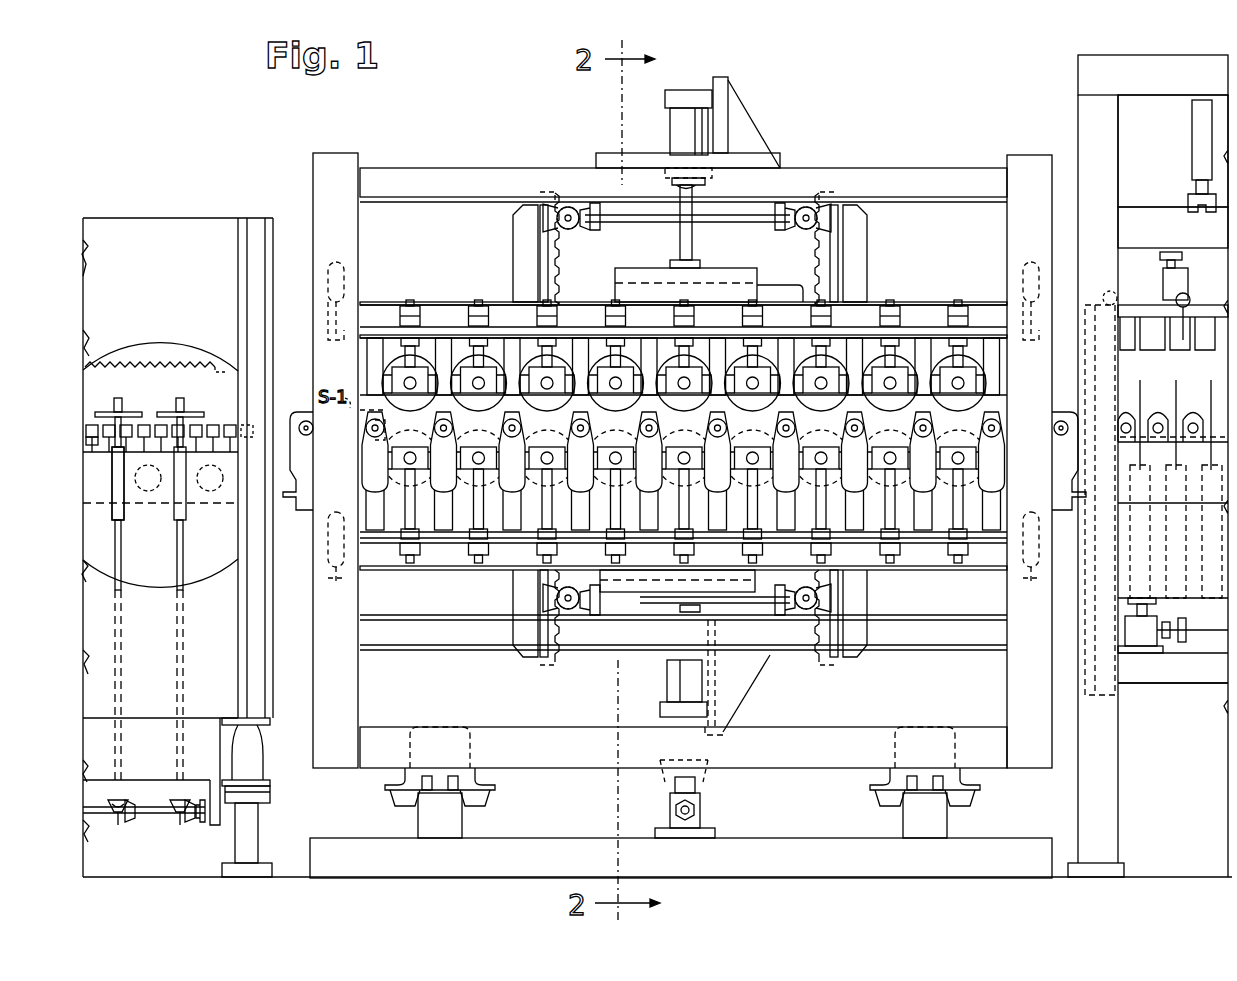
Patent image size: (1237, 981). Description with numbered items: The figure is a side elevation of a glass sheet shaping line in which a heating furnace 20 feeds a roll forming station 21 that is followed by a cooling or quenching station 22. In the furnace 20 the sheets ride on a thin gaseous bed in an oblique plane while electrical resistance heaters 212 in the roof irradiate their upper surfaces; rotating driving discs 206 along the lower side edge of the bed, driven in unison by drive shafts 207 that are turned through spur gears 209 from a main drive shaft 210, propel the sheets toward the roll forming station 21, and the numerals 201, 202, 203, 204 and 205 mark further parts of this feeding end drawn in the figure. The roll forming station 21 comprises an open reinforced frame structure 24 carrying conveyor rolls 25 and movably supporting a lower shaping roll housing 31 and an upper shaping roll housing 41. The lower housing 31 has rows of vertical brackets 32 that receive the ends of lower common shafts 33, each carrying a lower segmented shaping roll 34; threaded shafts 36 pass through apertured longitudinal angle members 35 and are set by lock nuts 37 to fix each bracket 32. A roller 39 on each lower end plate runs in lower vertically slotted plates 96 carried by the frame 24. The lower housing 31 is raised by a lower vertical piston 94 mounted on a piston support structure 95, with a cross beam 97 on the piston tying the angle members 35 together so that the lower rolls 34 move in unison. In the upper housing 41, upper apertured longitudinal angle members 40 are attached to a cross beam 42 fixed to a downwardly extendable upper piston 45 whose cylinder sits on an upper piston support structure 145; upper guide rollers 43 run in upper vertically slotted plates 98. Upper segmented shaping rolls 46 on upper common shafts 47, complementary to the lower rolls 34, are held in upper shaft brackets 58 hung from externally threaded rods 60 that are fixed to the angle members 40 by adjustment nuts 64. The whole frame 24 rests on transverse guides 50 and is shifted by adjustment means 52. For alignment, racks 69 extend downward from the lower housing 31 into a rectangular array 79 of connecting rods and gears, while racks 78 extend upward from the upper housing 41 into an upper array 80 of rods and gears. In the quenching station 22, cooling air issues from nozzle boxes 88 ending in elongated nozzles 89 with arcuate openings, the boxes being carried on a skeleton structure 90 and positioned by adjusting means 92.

The heating furnace 20 is at (172, 205).
The roll forming station 21 is at (450, 150).
The cooling or quenching station 22 is at (1062, 72).
The open reinforced frame structure 24 is at (305, 185).
The conveyor rolls 25 is at (660, 428).
The lower shaping roll housing 31 is at (480, 585).
The vertical brackets 32 is at (432, 440).
The lower common shafts 33 is at (498, 440).
The lower segmented shaping rolls 34 is at (568, 440).
The apertured longitudinal angle members 35 is at (700, 530).
The threaded shafts 36 is at (565, 520).
The lock nuts 37 is at (470, 540).
The roller 39 is at (335, 577).
The upper apertured longitudinal angle members 40 is at (922, 325).
The upper shaping roll housing 41 is at (462, 292).
The cross beam 42 is at (660, 278).
The upper guide rollers 43 is at (330, 322).
The upper piston 45 is at (678, 128).
The upper segmented shaping rolls 46 is at (905, 440).
The upper common shaft 47 is at (770, 440).
The transverse guides 50 is at (370, 800).
The adjustment means 52 is at (705, 803).
The upper shaft brackets 58 is at (790, 440).
The externally threaded rods 60 is at (868, 345).
The adjustment nuts 64 is at (898, 328).
The racks 69 is at (555, 665).
The racks 78 is at (562, 245).
The rectangular array of lower horizontal connecting rods and gears 79 is at (740, 598).
The upper array of rods and gears 80 is at (708, 222).
The nozzle boxes 88 is at (1158, 318).
The elongated nozzles 89 is at (1165, 428).
The skeleton structure 90 is at (1115, 200).
The adjusting means 92 is at (1145, 660).
The lower vertical piston 94 is at (680, 683).
The piston support structure 95 is at (742, 655).
The lower vertically slotted plates 96 is at (338, 585).
The cross beam 97 is at (605, 598).
The upper vertically slotted plates 98 is at (335, 345).
The upper piston support structure 145 is at (746, 158).
The hopper cells 201 is at (75, 426).
The cell 202 is at (88, 445).
The lift rod 203 is at (140, 410).
The opening 204 is at (192, 495).
The opening 205 is at (148, 492).
The rotating driving discs 206 is at (185, 412).
The drive shafts 207 is at (150, 548).
The spur gears 209 is at (105, 812).
The main drive shaft 210 is at (178, 815).
The electrical resistance heaters 212 is at (145, 355).